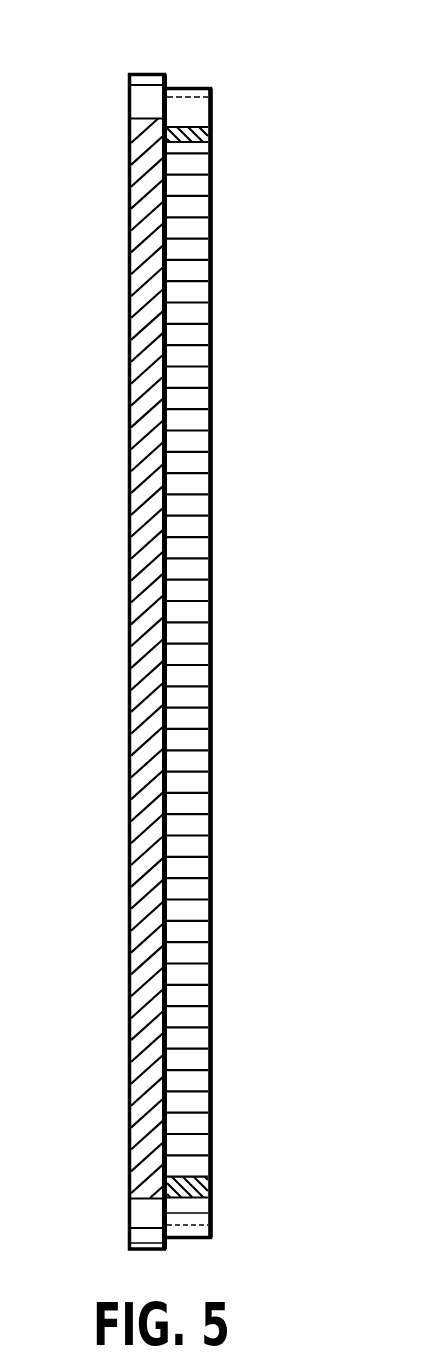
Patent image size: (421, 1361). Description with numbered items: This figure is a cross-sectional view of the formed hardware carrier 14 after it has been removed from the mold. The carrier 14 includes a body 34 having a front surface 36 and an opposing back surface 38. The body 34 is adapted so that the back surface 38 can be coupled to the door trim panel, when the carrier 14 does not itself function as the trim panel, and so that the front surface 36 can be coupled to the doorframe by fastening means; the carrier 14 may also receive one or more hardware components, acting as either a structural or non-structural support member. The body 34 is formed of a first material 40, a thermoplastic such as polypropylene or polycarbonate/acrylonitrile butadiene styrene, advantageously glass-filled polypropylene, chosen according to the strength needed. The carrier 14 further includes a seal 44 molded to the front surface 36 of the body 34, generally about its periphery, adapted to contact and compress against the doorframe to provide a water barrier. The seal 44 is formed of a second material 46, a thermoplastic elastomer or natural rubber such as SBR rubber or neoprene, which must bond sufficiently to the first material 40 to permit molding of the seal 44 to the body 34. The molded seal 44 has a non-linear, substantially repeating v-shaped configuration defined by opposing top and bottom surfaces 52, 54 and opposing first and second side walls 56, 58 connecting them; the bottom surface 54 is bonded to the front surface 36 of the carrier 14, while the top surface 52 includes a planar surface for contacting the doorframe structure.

The carrier 14 is at (275, 50).
The body 34 is at (147, 92).
The front surface 36 is at (168, 180).
The back surface 38 is at (128, 600).
The first material 40 is at (128, 363).
The seal 44 is at (213, 635).
The second material 46 is at (212, 131).
The top surface 52 is at (213, 265).
The bottom surface 54 is at (165, 542).
The first side wall 56 is at (213, 1208).
The second side wall 58 is at (197, 373).